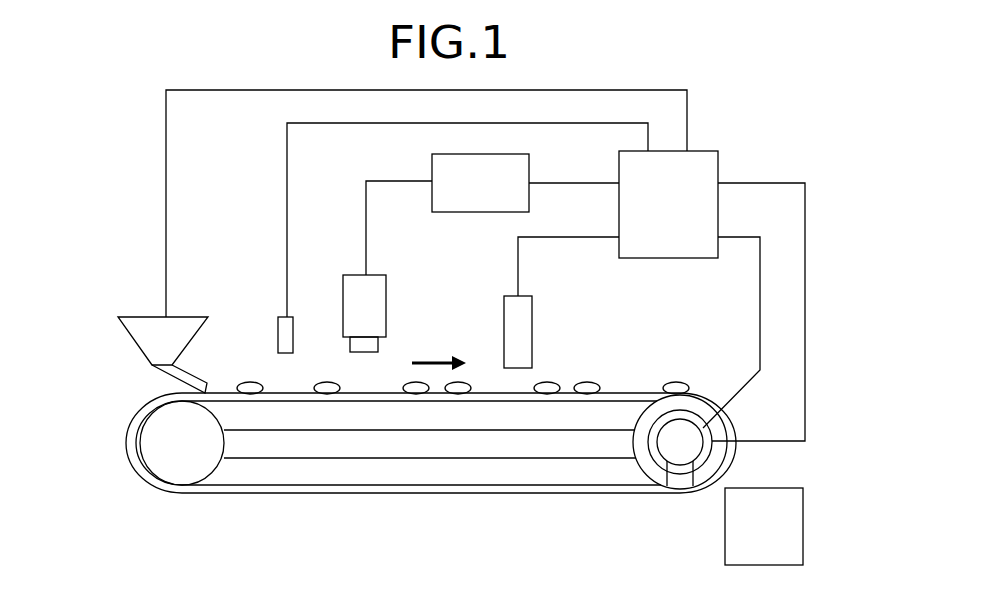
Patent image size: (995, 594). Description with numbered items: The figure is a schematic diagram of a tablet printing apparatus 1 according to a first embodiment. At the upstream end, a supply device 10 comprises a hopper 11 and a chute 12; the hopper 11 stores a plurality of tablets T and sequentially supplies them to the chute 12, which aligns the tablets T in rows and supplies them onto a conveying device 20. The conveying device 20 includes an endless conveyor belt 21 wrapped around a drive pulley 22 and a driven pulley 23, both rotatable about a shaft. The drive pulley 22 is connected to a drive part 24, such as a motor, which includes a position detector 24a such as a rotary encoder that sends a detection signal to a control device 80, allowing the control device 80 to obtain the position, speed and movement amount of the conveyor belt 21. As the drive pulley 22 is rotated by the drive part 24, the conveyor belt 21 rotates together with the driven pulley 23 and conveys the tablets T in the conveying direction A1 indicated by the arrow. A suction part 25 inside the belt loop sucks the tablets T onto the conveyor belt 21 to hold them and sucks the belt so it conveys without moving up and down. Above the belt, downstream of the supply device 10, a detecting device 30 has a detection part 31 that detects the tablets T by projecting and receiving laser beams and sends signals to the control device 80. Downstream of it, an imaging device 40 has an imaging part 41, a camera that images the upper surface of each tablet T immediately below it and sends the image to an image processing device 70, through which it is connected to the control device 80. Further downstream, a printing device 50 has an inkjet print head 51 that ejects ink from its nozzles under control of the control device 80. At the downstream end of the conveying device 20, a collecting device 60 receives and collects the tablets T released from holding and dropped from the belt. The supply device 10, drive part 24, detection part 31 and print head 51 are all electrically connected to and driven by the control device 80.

The tablet printing apparatus 1 is at (782, 140).
The supply device 10 is at (137, 278).
The hopper 11 is at (128, 317).
The chute 12 is at (200, 378).
The conveying device 20 is at (130, 405).
The conveyor belt 21 is at (327, 494).
The drive pulley 22 is at (638, 468).
The driven pulley 23 is at (185, 494).
The drive part 24 is at (667, 480).
The position detector 24a is at (693, 473).
The suction part 25 is at (450, 473).
The detecting device 30 is at (278, 302).
The detection part 31 is at (289, 317).
The imaging device 40 is at (352, 272).
The imaging part 41 is at (378, 275).
The printing device 50 is at (548, 312).
The inkjet print head 51 is at (525, 296).
The collecting device 60 is at (803, 518).
The image processing device 70 is at (529, 168).
The control device 80 is at (700, 151).
The tablet T is at (253, 382).
The conveying direction A1 is at (440, 360).